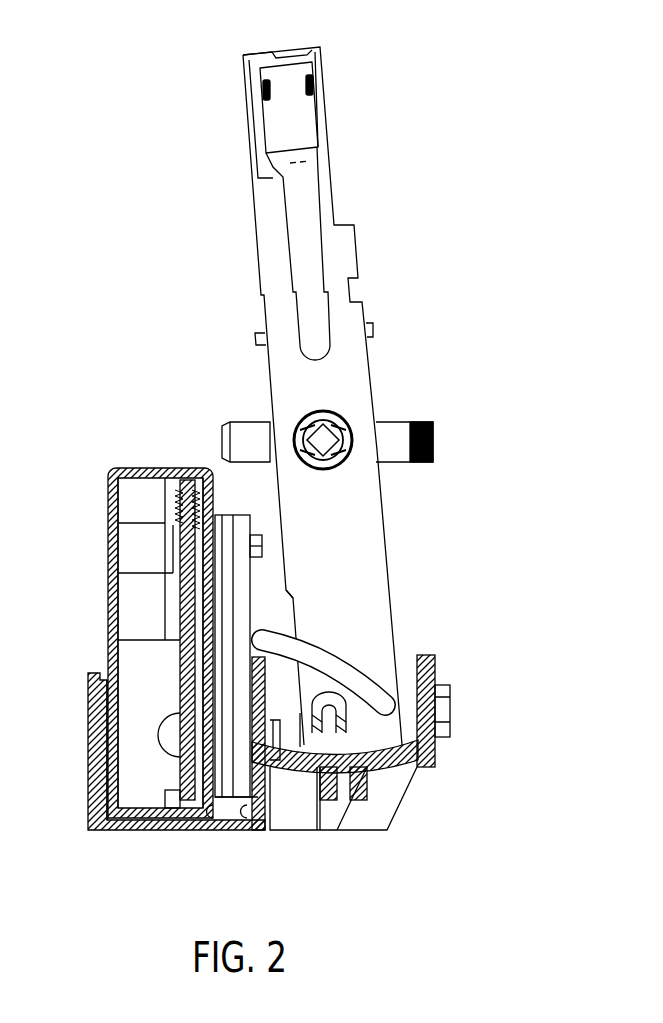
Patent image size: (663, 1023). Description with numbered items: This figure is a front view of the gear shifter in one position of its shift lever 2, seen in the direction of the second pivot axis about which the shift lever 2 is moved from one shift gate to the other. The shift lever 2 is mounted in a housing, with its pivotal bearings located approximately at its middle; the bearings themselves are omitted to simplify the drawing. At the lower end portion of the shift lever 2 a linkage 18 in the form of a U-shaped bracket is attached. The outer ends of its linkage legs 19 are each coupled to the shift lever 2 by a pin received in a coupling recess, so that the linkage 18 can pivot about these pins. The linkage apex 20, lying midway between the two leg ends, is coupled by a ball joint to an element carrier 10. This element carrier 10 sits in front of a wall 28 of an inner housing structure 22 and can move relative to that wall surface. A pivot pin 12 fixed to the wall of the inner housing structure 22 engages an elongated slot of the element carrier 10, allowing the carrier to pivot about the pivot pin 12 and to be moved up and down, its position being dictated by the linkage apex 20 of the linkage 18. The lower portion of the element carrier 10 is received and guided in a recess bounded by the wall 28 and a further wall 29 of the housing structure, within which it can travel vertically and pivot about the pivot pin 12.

The shift lever 2 is at (352, 181).
The element carrier 10 is at (233, 513).
The pivot pin 12 is at (262, 545).
The linkage 18 is at (347, 650).
The linkage legs 19 is at (395, 703).
The linkage apex 20 is at (307, 643).
The inner housing structure 22 is at (108, 500).
The wall 28 is at (215, 830).
The further wall 29 is at (245, 830).